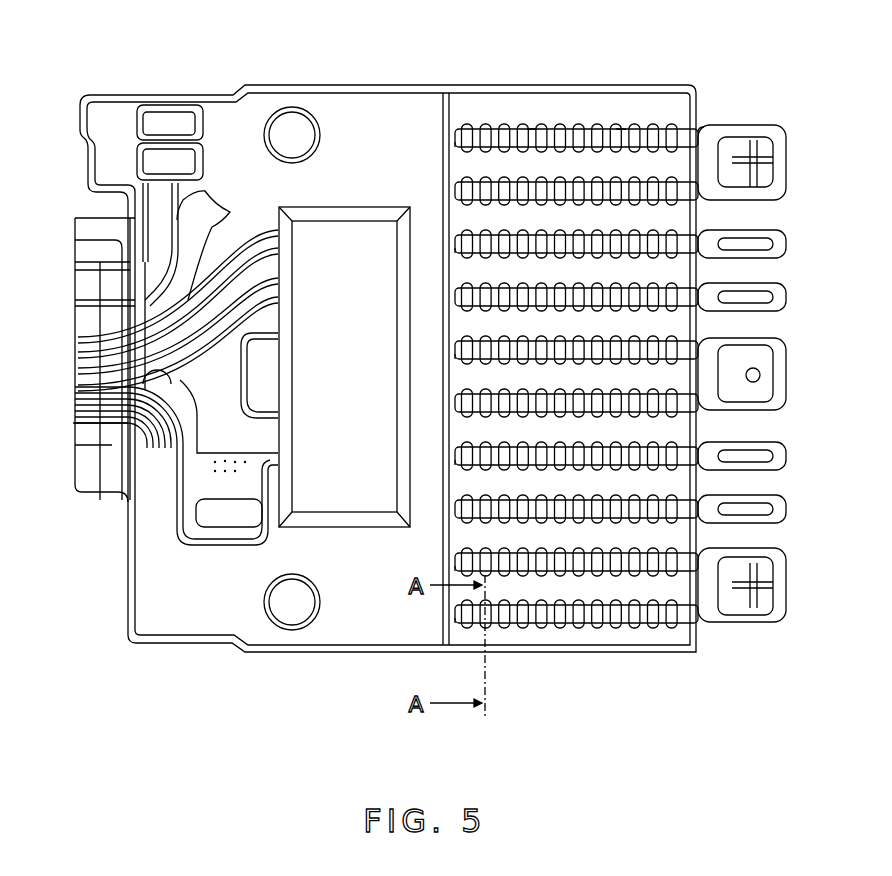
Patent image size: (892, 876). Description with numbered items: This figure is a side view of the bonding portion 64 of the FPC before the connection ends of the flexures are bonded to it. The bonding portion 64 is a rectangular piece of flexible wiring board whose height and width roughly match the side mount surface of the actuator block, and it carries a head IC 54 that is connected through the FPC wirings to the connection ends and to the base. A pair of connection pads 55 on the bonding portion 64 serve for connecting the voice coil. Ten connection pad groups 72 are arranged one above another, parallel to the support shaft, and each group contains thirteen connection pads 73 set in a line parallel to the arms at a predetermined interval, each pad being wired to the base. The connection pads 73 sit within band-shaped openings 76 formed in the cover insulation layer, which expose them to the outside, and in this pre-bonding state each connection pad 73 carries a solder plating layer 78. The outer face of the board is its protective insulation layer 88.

The head IC 54 is at (355, 240).
The connection pads 55 is at (175, 158).
The bonding portion 64 is at (383, 118).
The connection pad groups 72 is at (690, 702).
The connection pads 73 is at (522, 125).
The band-shaped openings 76 is at (525, 182).
The solder plating layer 78 is at (531, 128).
The protective insulation layer 88 is at (699, 138).